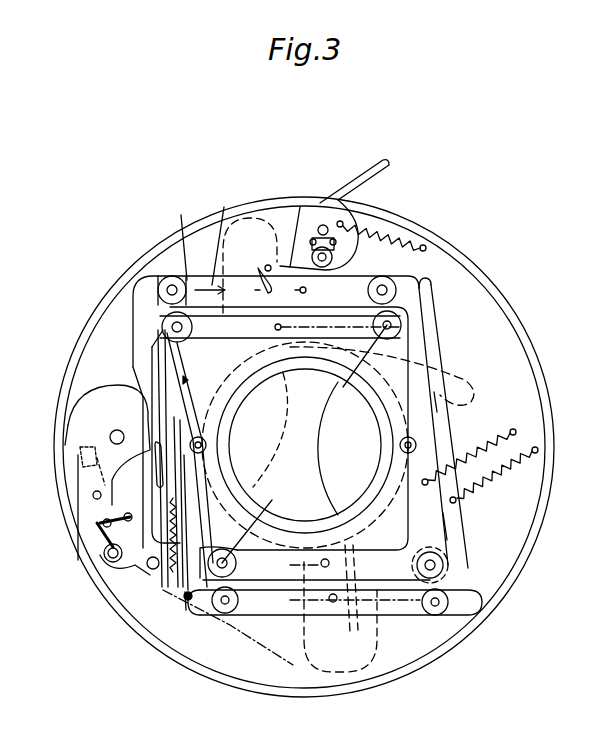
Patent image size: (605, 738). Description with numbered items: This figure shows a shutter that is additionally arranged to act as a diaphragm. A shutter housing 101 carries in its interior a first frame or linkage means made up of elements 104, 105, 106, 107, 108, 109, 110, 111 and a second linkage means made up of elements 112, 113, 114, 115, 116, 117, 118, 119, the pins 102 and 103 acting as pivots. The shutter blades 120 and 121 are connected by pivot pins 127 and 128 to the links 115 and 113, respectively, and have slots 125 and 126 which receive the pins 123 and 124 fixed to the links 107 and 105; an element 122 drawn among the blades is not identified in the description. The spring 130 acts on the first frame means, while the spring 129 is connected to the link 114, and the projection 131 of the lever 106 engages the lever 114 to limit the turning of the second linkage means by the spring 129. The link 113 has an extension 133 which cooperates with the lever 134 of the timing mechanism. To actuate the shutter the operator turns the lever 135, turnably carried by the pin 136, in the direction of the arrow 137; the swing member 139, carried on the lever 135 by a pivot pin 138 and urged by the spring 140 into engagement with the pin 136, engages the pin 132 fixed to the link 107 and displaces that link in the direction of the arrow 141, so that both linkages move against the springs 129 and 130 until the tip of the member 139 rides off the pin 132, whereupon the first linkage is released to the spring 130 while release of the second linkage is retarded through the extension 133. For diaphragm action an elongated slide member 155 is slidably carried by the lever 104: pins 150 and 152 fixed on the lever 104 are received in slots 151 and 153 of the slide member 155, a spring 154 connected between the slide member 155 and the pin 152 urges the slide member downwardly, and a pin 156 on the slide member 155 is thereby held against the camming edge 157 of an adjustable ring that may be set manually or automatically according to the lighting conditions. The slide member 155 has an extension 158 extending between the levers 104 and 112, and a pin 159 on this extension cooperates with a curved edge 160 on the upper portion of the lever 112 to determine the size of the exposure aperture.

The shutter housing 101 is at (536, 362).
The pin 102 is at (206, 445).
The pin 103 is at (400, 445).
The lever 104 is at (140, 321).
The link 105 is at (376, 618).
The lever 106 is at (463, 533).
The link 107 is at (195, 239).
The frame or linkage means element 108 is at (163, 280).
The frame or linkage means element 109 is at (225, 614).
The frame or linkage means element 110 is at (482, 603).
The frame or linkage means element 111 is at (396, 288).
The lever 112 is at (200, 497).
The link 113 is at (373, 557).
The link 114 is at (428, 515).
The link 115 is at (205, 400).
The linkage means element 116 is at (162, 328).
The linkage means element 117 is at (261, 527).
The linkage means element 118 is at (444, 568).
The linkage means element 119 is at (360, 358).
The shutter blade 120 is at (283, 385).
The shutter blade 121 is at (317, 462).
The shutter blade 122 is at (352, 500).
The pin 123 is at (262, 280).
The pin 124 is at (347, 608).
The slot 125 is at (264, 248).
The slot 126 is at (337, 612).
The pivot pin 127 is at (275, 327).
The pivot pin 128 is at (341, 568).
The spring 129 is at (475, 430).
The spring 130 is at (483, 482).
The projection 131 is at (448, 532).
The pin 132 is at (334, 262).
The extension 133 is at (160, 575).
The lever 134 is at (98, 542).
The lever 135 is at (384, 160).
The pin 136 is at (323, 225).
The arrow 137 is at (318, 149).
The pivot pin 138 is at (372, 215).
The swing member 139 is at (267, 313).
The spring 140 is at (303, 287).
The arrow 141 is at (222, 236).
The pin 150 is at (150, 450).
The slot 151 is at (157, 477).
The pin 152 is at (137, 567).
The slot 153 is at (150, 570).
The spring 154 is at (150, 495).
The slide member 155 is at (170, 588).
The pin 156 is at (180, 598).
The camming edge 157 is at (197, 602).
The extension 158 is at (191, 468).
The pin 159 is at (188, 380).
The curved edge 160 is at (197, 417).